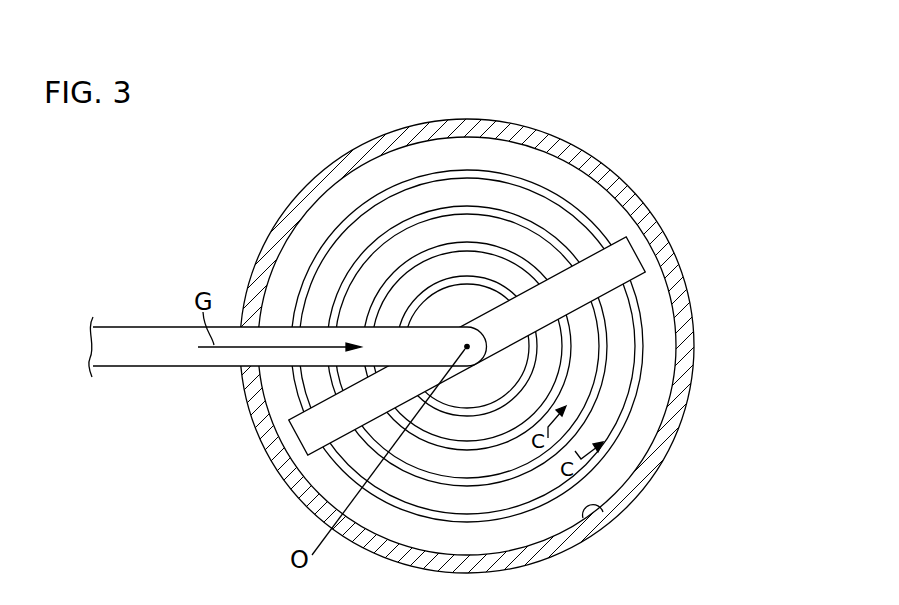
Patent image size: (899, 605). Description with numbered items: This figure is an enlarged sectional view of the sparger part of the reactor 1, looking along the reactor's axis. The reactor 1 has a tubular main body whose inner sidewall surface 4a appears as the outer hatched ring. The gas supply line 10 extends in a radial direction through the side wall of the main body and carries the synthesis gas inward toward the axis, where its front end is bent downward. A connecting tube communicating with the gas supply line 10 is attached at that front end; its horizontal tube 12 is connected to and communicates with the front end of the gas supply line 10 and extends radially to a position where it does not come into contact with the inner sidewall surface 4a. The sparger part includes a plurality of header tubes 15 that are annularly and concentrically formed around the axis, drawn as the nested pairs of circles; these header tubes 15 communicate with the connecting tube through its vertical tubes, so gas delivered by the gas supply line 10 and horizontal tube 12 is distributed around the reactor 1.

The reactor 1 is at (608, 165).
The gas supply line 10 is at (135, 337).
The horizontal tube 12 is at (624, 262).
The header tubes 15 is at (537, 343).
The inner sidewall surface 4a is at (584, 517).